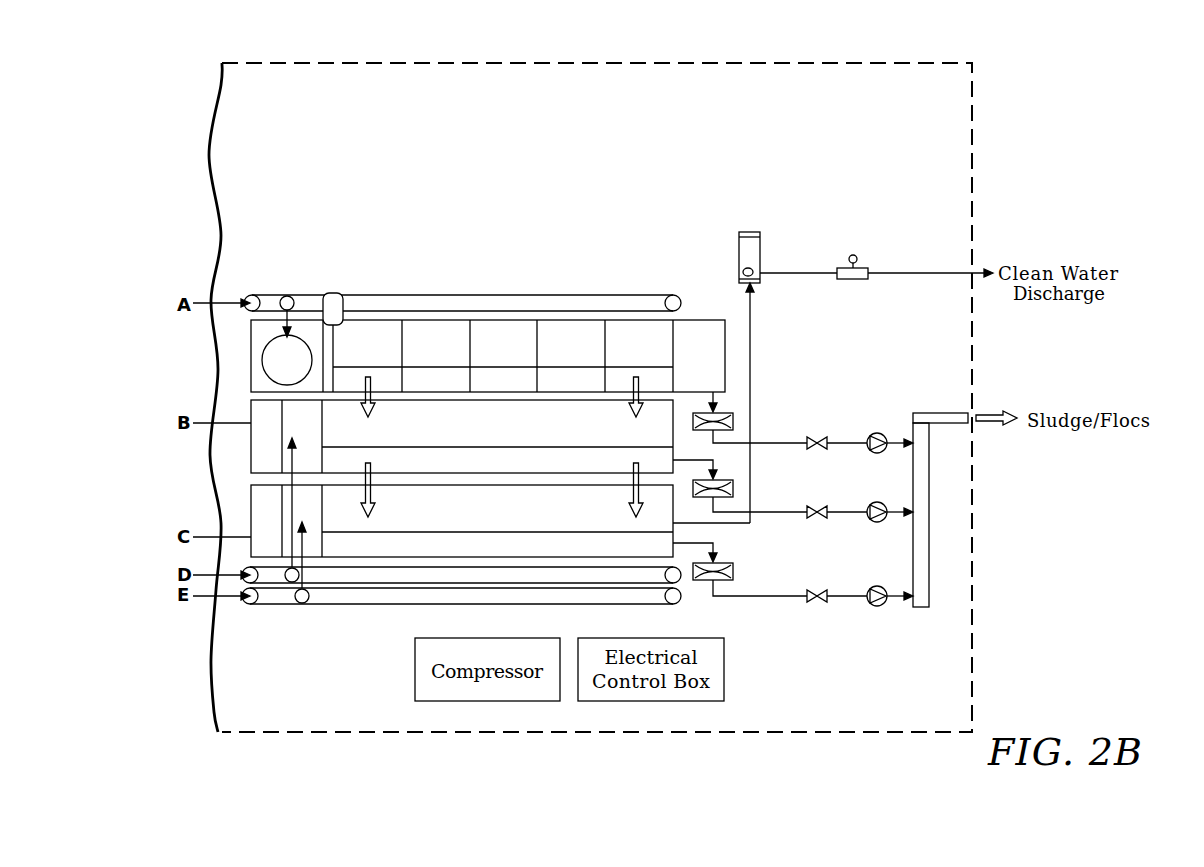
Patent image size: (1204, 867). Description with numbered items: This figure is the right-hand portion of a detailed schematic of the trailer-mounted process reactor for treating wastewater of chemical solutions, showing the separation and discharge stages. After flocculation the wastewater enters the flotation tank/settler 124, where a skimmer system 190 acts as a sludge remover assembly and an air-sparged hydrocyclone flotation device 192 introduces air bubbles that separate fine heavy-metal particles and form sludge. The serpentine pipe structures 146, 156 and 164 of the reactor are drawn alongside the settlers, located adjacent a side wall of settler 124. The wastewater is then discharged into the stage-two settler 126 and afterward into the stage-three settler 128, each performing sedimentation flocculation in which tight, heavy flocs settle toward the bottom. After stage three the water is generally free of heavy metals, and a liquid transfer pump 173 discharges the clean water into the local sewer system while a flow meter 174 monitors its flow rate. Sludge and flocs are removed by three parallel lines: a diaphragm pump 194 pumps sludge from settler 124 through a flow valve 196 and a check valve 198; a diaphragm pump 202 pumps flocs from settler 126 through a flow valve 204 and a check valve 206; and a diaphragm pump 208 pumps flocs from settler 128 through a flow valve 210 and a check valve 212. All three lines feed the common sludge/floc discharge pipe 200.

The flotation tank/settler 124 is at (250, 327).
The settler 126 is at (250, 400).
The settler 128 is at (250, 487).
The serpentine pipe structure 146 is at (418, 300).
The serpentine pipe structure 156 is at (337, 576).
The serpentine pipe structure 164 is at (272, 602).
The liquid transfer pump 173 is at (748, 251).
The flow meter 174 is at (858, 268).
The skimmer system 190 is at (334, 298).
The air-sparged hydrocyclone (ASH) flotation device 192 is at (265, 380).
The diaphragm pump 194 is at (735, 413).
The flow valve 196 is at (817, 437).
The check valve 198 is at (879, 433).
The sludge/floc discharge pipe 200 is at (927, 497).
The diaphragm pump 202 is at (735, 480).
The flow valve 204 is at (817, 506).
The check valve 206 is at (879, 502).
The diaphragm pump 208 is at (735, 563).
The flow valve 210 is at (817, 590).
The check valve 212 is at (879, 586).